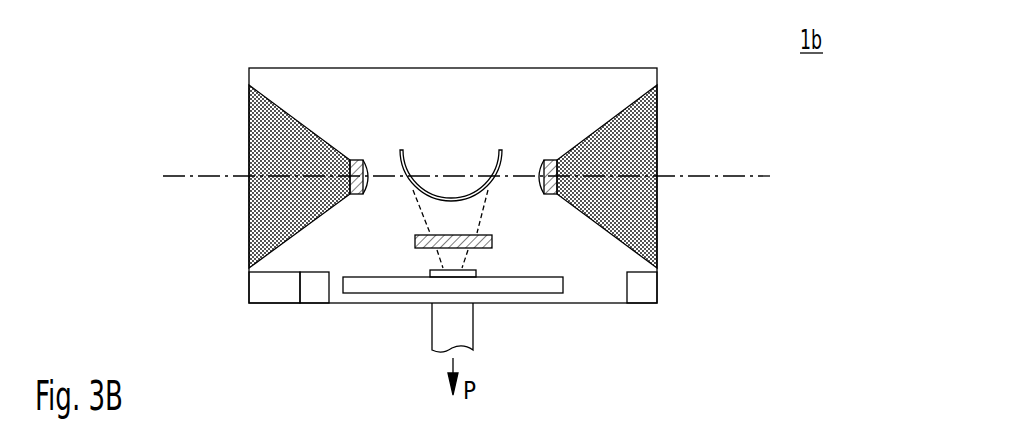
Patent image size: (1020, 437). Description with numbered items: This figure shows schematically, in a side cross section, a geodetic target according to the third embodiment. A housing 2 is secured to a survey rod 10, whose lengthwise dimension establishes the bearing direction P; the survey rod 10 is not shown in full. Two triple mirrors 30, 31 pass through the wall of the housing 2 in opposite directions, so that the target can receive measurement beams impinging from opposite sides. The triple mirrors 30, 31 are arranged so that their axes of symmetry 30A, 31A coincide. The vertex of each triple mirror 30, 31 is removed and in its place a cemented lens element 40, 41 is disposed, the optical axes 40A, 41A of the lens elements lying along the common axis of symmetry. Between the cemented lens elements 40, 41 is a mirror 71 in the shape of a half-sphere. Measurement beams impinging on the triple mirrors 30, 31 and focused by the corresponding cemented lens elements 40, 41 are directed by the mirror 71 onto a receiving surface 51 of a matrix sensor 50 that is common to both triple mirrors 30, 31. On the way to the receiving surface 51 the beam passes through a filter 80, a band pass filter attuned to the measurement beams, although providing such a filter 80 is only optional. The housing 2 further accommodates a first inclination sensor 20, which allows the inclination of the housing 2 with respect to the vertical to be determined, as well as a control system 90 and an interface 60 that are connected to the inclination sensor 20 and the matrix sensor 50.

The housing 2 is at (589, 68).
The survey rod 10 is at (475, 333).
The first inclination sensor 20 is at (313, 293).
The triple mirror 30 is at (249, 92).
The triple mirror 31 is at (659, 95).
The axis of symmetry 30A is at (167, 176).
The axis of symmetry 31A is at (745, 176).
The cemented lens element 40 is at (357, 158).
The cemented lens element 41 is at (547, 158).
The optical axis 40A is at (188, 172).
The optical axis 41A is at (705, 172).
The matrix sensor 50 is at (564, 283).
The receiving surface 51 is at (476, 270).
The interface 60 is at (268, 293).
The mirror 71 is at (498, 149).
The filter 80 is at (413, 240).
The control system 90 is at (641, 293).